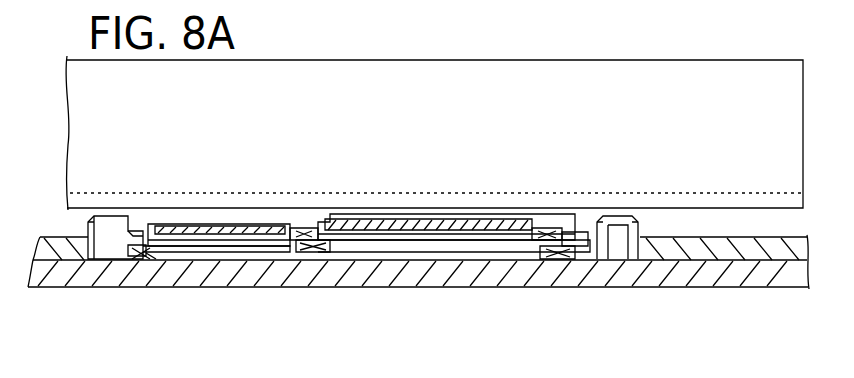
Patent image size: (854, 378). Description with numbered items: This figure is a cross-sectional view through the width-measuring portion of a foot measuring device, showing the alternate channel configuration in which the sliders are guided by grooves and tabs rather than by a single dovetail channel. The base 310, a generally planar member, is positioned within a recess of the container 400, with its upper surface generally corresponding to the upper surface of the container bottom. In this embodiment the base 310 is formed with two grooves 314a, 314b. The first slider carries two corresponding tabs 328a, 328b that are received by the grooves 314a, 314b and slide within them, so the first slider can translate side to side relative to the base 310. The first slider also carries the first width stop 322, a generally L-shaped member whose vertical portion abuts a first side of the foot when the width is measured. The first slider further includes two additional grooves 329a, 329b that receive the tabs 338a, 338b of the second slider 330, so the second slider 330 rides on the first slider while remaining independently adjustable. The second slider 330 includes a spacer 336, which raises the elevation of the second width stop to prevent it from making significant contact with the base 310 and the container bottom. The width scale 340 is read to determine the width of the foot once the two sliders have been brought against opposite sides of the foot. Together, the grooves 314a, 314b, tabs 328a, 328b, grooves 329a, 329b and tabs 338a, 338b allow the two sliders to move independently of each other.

The base 310 is at (112, 258).
The groove 314a is at (141, 259).
The groove 314b is at (583, 259).
The first width stop 322 is at (67, 168).
The tab 328a is at (156, 256).
The tab 328b is at (591, 232).
The groove 329a is at (295, 256).
The groove 329b is at (549, 228).
The second slider 330 is at (487, 59).
The spacer 336 is at (413, 216).
The tab 338a is at (319, 256).
The tab 338b is at (545, 259).
The width scale 340 is at (217, 224).
The container 400 is at (757, 287).